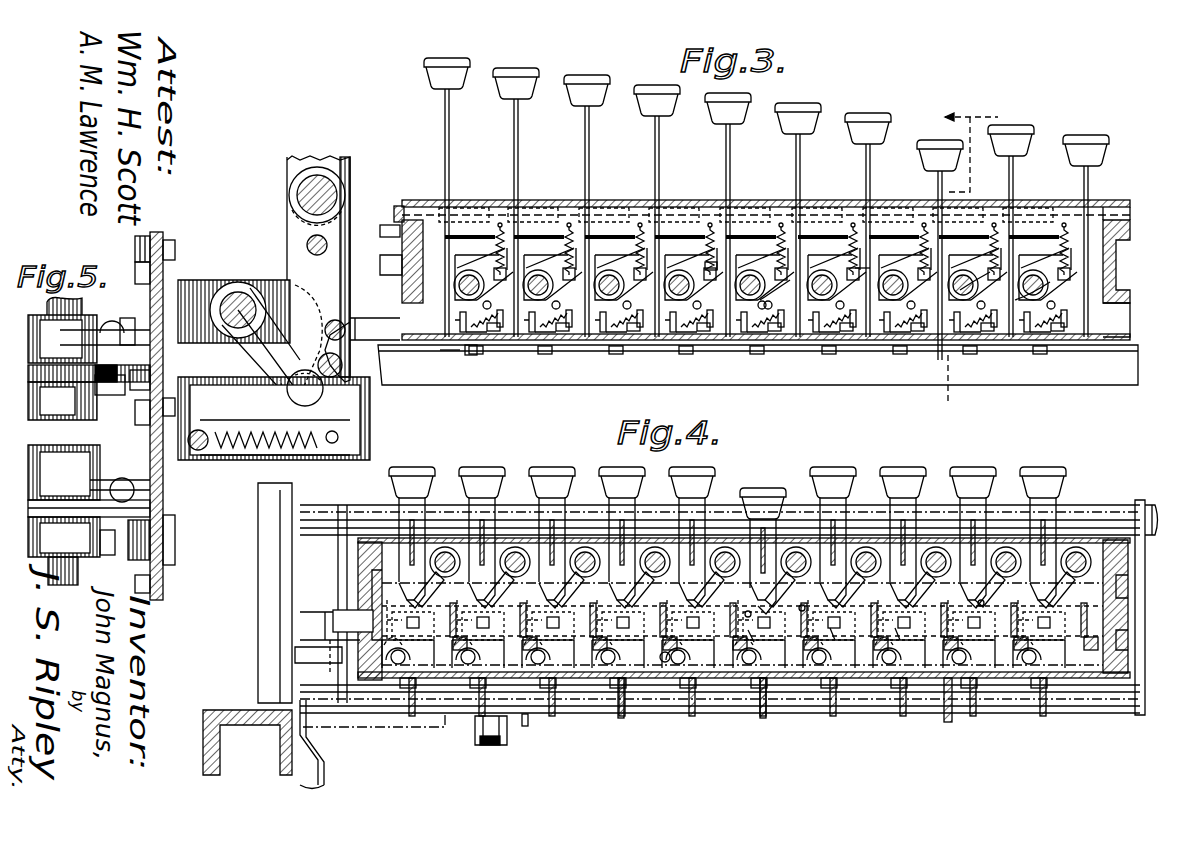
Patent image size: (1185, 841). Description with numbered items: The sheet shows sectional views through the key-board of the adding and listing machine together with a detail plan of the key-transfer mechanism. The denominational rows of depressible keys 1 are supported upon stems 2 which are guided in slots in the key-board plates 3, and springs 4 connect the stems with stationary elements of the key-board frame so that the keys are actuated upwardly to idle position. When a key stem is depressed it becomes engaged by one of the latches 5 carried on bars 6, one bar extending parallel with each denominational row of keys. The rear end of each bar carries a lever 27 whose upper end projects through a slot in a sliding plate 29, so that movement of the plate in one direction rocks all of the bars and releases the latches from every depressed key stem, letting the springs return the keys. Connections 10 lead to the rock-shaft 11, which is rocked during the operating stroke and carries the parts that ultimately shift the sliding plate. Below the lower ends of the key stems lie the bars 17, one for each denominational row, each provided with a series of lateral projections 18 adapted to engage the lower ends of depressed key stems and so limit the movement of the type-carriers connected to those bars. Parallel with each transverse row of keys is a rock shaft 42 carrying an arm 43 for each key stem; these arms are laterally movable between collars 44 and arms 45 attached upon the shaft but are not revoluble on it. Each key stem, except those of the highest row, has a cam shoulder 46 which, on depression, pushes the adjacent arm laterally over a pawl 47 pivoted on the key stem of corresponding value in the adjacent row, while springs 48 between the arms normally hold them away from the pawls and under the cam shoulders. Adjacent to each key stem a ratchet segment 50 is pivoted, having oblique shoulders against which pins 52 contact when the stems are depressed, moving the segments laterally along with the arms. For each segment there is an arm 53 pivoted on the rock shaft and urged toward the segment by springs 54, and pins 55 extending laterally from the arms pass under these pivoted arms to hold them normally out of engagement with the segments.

In FIG. 3, the depressible keys 1 is at (600, 95).
In FIG. 4, the depressible keys 1 is at (555, 470).
In FIG. 3, the key stems 2 is at (450, 157).
In FIG. 4, the key stems 2 is at (700, 508).
In FIG. 5, the key stems 2 is at (163, 357).
In FIG. 3, the key-board plates 3 is at (700, 203).
In FIG. 4, the key-board plates 3 is at (486, 460).
In FIG. 3, the springs 4 is at (825, 220).
In FIG. 3, the latches 5 is at (1117, 262).
In FIG. 4, the latches 5 is at (740, 631).
In FIG. 3, the bars 6 is at (537, 250).
In FIG. 4, the bars 6 is at (432, 565).
In FIG. 3, the connections 10 is at (270, 385).
In FIG. 3, the rock-shaft 11 is at (240, 295).
In FIG. 4, the rock-shaft 11 is at (318, 660).
In FIG. 3, the bars 17 is at (445, 362).
In FIG. 4, the bars 17 is at (762, 718).
In FIG. 3, the lateral projections 18 is at (470, 356).
In FIG. 4, the lateral projections 18 is at (620, 716).
In FIG. 3, the lever 27 is at (352, 318).
In FIG. 3, the sliding plate 29 is at (392, 205).
In FIG. 3, the rock shaft 42 is at (1035, 290).
In FIG. 4, the rock shaft 42 is at (336, 616).
In FIG. 5, the rock shaft 42 is at (48, 300).
In FIG. 3, the arm 43 is at (1020, 298).
In FIG. 4, the arm 43 is at (800, 605).
In FIG. 5, the arm 43 is at (90, 375).
In FIG. 4, the collars 44 is at (946, 722).
In FIG. 5, the collars 44 is at (62, 339).
In FIG. 3, the arms 45 is at (965, 290).
In FIG. 4, the arms 45 is at (980, 600).
In FIG. 5, the arms 45 is at (128, 430).
In FIG. 4, the cam shoulder 46 is at (856, 625).
In FIG. 4, the pawl 47 is at (655, 658).
In FIG. 5, the pawl 47 is at (150, 240).
In FIG. 5, the springs 48 is at (122, 467).
In FIG. 3, the ratchet segment 50 is at (712, 268).
In FIG. 4, the ratchet segment 50 is at (745, 612).
In FIG. 5, the ratchet segment 50 is at (126, 320).
In FIG. 5, the pins 52 is at (160, 262).
In FIG. 3, the arm 53 is at (778, 280).
In FIG. 4, the arm 53 is at (751, 627).
In FIG. 5, the arm 53 is at (92, 328).
In FIG. 3, the springs 54 is at (760, 305).
In FIG. 3, the pins 55 is at (855, 270).
In FIG. 5, the pins 55 is at (80, 372).